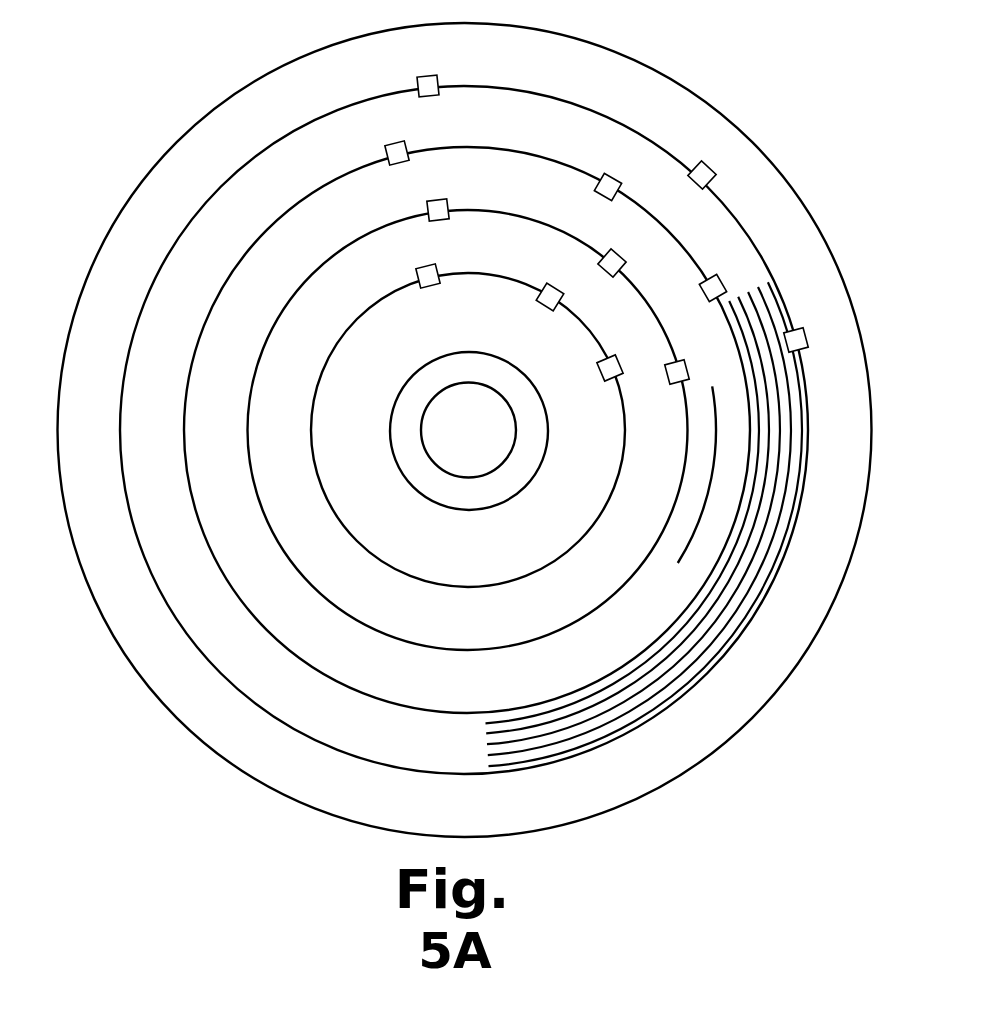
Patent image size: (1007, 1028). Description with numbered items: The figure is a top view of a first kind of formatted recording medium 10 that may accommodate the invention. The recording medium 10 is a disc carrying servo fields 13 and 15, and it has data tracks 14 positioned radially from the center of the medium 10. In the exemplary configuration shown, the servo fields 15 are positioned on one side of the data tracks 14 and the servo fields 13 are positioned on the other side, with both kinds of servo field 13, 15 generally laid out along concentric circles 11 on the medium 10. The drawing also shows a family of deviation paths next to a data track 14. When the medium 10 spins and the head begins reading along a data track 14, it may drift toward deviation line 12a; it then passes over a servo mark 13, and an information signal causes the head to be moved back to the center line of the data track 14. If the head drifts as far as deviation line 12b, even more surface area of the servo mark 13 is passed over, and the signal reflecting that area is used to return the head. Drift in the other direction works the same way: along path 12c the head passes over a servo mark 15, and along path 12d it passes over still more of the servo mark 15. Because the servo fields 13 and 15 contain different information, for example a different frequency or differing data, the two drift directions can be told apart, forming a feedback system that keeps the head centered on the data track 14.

The recording medium 10 is at (752, 132).
The concentric circles 11 is at (192, 363).
The deviation line 12a is at (793, 486).
The deviation line 12b is at (795, 518).
The path 12c is at (775, 411).
The path 12d is at (765, 432).
The servo field 13 is at (614, 253).
The data track 14 is at (716, 470).
The servo field 15 is at (604, 180).